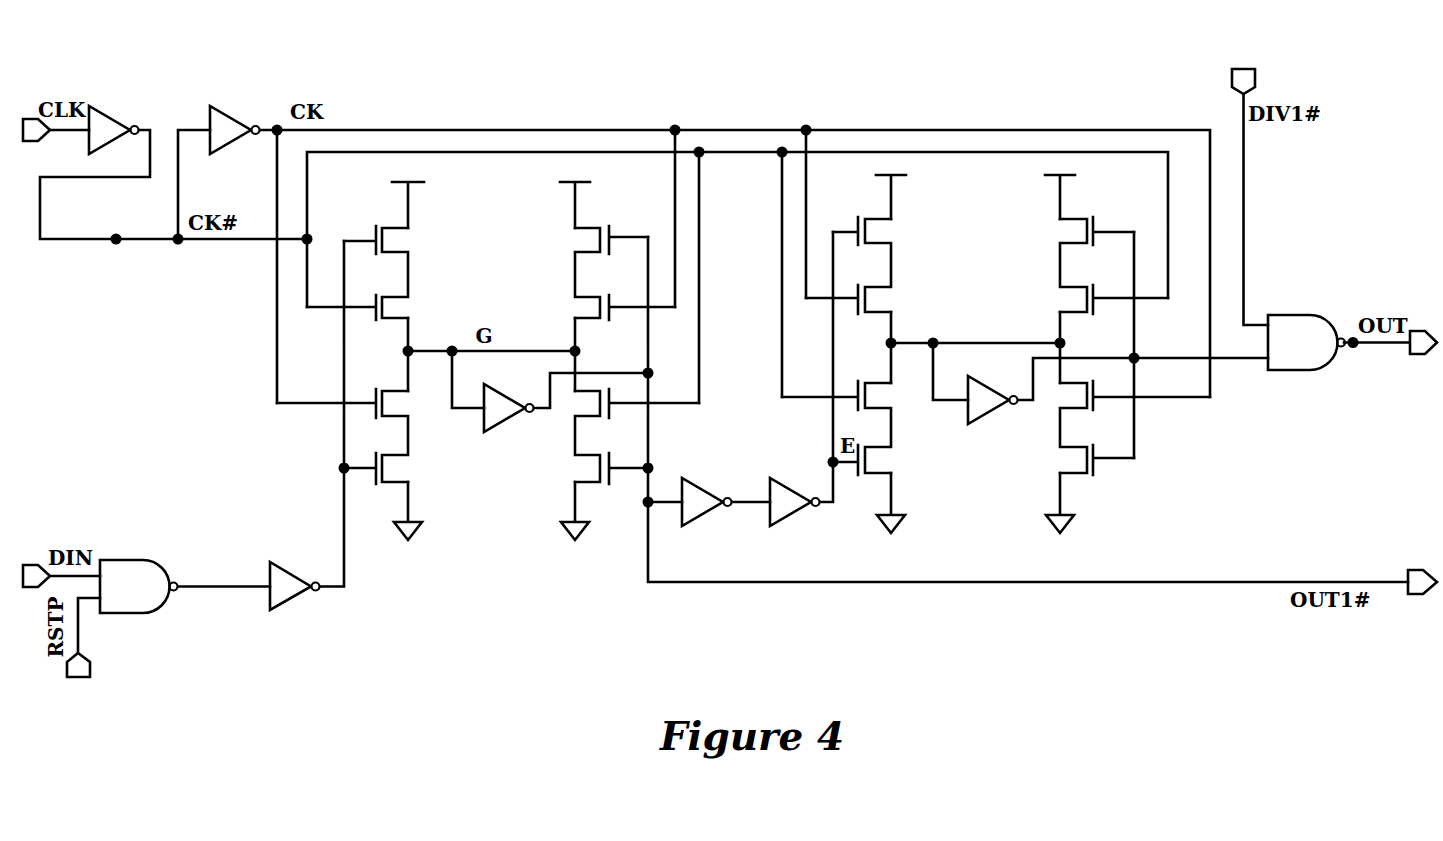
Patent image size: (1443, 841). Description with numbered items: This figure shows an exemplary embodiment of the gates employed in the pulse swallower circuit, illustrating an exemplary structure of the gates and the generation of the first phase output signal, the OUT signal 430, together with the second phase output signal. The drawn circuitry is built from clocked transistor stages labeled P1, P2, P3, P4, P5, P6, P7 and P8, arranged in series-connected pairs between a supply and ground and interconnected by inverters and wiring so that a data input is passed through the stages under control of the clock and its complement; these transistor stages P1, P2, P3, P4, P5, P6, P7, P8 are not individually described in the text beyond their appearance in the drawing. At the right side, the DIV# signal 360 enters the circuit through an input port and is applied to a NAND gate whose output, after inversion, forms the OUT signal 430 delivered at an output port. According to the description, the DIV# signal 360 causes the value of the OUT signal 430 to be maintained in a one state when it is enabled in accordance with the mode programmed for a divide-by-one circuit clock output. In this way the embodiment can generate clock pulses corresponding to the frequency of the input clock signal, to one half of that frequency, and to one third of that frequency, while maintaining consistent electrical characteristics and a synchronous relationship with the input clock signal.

The DIV# signal 360 is at (1248, 69).
The OUT signal 430 is at (1422, 330).
The transistor pair P1 is at (342, 436).
The transistor pair P2 is at (357, 273).
The transistor pair P3 is at (637, 436).
The transistor pair P4 is at (625, 273).
The transistor pair P5 is at (836, 428).
The transistor pair P6 is at (848, 265).
The transistor pair P7 is at (1135, 428).
The transistor pair P8 is at (1114, 265).